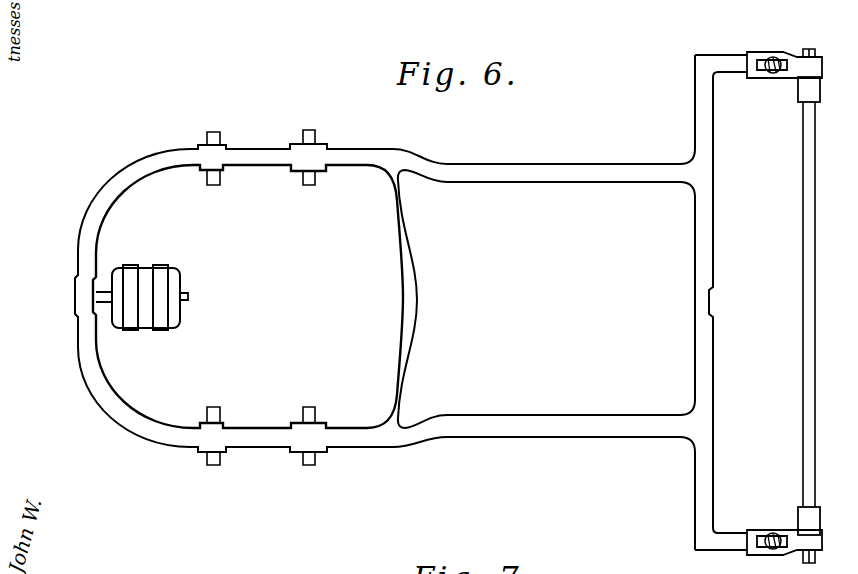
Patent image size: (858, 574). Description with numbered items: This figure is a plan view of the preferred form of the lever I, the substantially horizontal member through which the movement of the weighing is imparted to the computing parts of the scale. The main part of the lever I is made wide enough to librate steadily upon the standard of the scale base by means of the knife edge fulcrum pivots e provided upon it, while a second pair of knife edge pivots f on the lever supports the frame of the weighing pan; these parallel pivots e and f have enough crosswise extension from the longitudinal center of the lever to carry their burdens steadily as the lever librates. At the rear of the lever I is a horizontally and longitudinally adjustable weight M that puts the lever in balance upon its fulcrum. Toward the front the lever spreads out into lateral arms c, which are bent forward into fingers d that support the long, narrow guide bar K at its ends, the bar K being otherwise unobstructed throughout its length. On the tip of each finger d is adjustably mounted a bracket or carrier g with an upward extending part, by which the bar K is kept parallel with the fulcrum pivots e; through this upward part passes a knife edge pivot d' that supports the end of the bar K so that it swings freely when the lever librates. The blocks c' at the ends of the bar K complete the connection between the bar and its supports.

The knife edge fulcrum pivots e is at (217, 132).
The knife edge pivots f is at (313, 130).
The adjustable weight M is at (180, 272).
The lever I is at (546, 299).
The lateral arms c is at (702, 302).
The fingers d is at (721, 295).
The knife edge pivot d' is at (822, 295).
The bearing block c' is at (825, 306).
The bracket or carrier g is at (777, 77).
The guide bar K is at (816, 318).